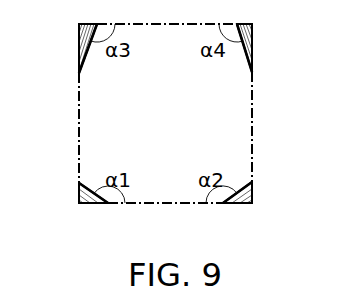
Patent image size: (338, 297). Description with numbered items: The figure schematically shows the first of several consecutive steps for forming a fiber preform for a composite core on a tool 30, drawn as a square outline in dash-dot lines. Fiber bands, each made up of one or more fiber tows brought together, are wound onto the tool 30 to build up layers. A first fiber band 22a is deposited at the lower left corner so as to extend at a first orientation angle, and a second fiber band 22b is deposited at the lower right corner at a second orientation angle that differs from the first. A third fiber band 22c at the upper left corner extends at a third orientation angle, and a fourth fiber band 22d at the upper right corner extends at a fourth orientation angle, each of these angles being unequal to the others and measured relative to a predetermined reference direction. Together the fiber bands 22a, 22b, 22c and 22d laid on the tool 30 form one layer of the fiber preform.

The tool 30 is at (244, 133).
The first fiber band 22a is at (88, 206).
The second fiber band 22b is at (247, 204).
The third fiber band 22c is at (78, 27).
The fourth fiber band 22d is at (253, 24).